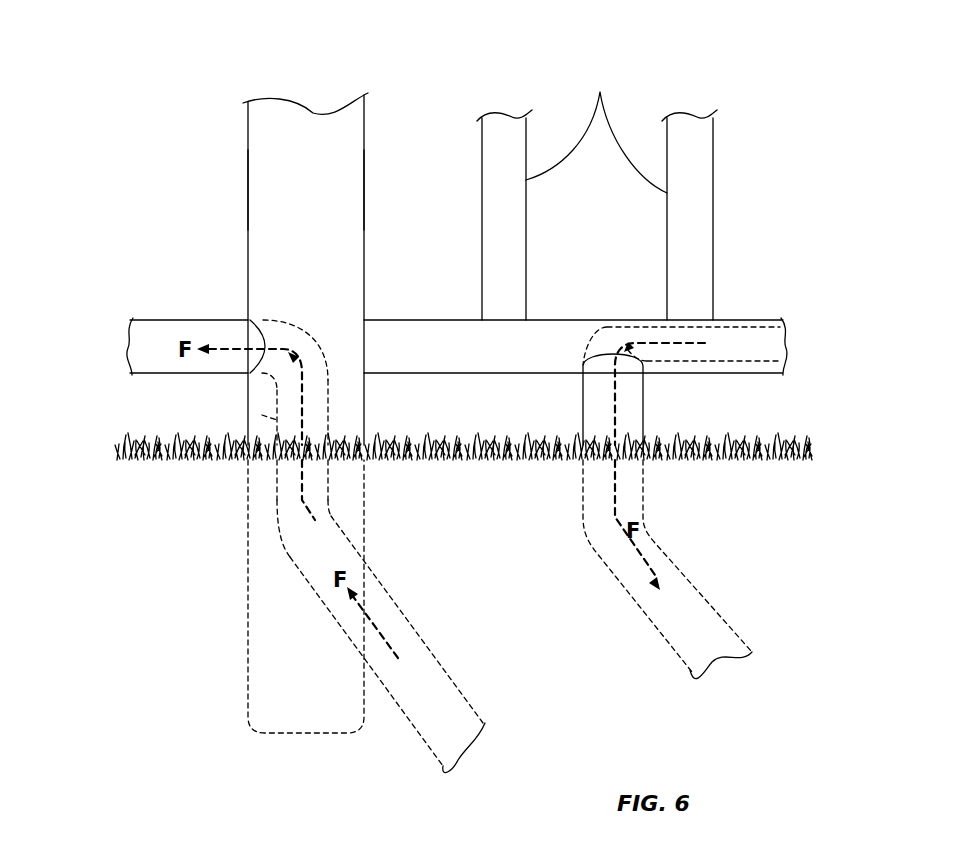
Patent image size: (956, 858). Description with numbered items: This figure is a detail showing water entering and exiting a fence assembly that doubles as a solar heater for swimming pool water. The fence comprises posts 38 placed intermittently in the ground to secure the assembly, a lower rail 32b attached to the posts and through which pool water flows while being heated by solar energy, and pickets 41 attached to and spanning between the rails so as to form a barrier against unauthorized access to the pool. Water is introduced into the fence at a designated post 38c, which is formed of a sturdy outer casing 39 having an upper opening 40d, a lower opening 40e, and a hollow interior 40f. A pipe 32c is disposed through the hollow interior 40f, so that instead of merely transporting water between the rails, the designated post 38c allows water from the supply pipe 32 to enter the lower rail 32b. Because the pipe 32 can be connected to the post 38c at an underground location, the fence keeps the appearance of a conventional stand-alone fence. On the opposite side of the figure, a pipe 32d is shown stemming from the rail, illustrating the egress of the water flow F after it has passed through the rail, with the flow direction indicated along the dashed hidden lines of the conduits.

The pipe 32 is at (425, 636).
The lower rail 32b is at (160, 318).
The pipe 32c is at (330, 422).
The pipe 32d is at (692, 585).
The posts 38 is at (248, 150).
The designated post 38c is at (364, 186).
The outer casing 39 is at (248, 190).
The upper opening 40d is at (263, 312).
The lower opening 40e is at (290, 500).
The hollow interior 40f is at (262, 418).
The pickets 41 is at (600, 95).